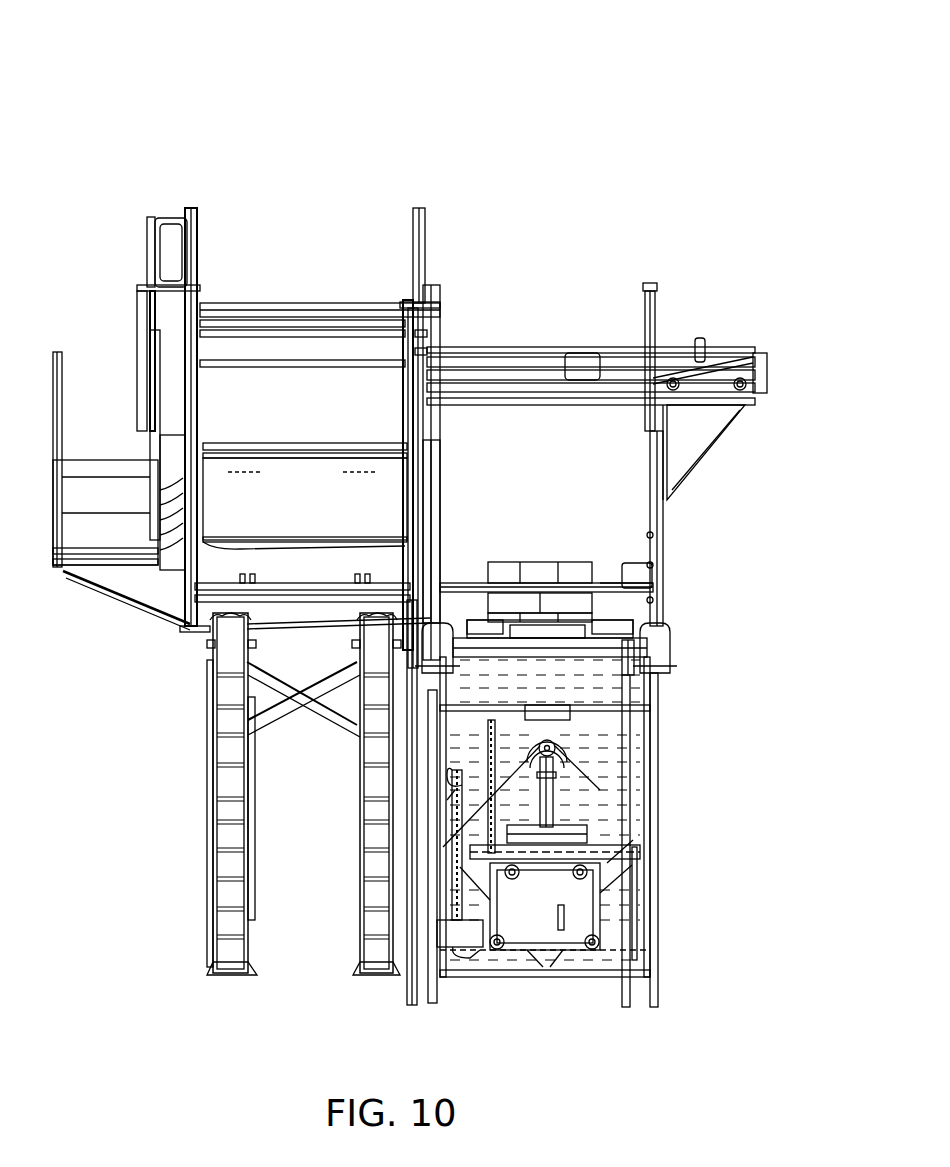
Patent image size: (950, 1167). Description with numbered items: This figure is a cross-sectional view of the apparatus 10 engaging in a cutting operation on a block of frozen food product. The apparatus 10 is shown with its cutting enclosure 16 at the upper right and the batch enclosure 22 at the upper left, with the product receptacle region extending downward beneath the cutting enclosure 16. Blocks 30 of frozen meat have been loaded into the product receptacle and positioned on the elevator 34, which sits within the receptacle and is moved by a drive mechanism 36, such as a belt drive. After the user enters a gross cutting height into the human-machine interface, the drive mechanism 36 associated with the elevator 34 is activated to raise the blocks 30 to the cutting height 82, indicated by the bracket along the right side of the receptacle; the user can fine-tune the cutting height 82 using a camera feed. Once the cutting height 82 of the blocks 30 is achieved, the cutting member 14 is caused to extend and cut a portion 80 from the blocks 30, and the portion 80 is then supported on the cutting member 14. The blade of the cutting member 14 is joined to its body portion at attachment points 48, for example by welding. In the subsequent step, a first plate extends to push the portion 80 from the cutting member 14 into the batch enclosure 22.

The apparatus 10 is at (188, 62).
The batch enclosure 22 is at (297, 266).
The cutting enclosure 16 is at (514, 318).
The portion 80 is at (540, 560).
The attachment points 48 is at (467, 583).
The blocks 30 is at (602, 553).
The cutting member 14 is at (642, 574).
The elevator 34 is at (630, 643).
The drive mechanism 36 is at (558, 752).
The cutting height 82 is at (770, 605).